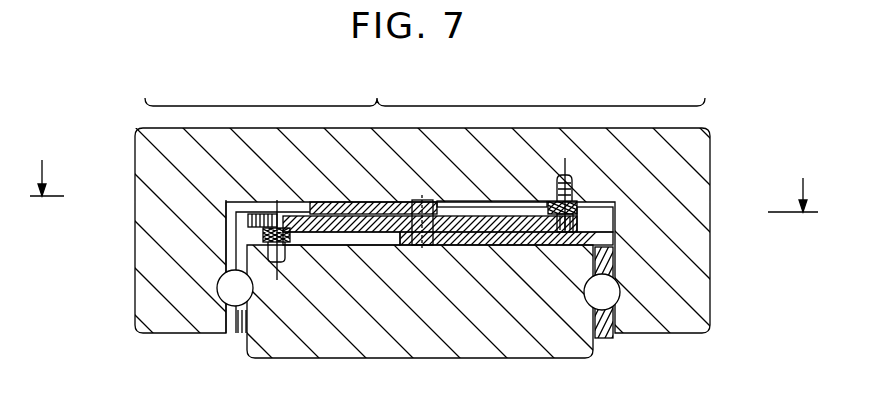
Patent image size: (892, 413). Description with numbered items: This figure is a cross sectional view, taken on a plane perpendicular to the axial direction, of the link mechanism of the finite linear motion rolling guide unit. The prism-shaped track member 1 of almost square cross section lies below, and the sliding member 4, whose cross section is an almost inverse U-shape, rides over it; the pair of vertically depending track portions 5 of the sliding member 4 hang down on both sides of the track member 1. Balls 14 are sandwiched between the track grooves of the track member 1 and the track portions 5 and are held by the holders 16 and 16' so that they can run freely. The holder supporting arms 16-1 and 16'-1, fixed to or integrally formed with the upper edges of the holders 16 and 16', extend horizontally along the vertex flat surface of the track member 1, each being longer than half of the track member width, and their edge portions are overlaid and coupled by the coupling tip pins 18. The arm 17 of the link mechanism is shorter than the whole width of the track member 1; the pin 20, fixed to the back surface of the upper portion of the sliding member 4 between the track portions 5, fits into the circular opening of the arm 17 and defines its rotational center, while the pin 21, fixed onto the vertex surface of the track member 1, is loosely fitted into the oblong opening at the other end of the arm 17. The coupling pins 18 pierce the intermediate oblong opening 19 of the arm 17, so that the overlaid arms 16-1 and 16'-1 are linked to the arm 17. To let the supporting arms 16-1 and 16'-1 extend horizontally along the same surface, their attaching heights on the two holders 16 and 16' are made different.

The track member 1 is at (427, 348).
The sliding member 4 is at (446, 206).
The vertically depending track portions 5 is at (137, 253).
The balls 14 is at (618, 303).
The holder 16 is at (603, 289).
The holder supporting arm 16-1 is at (538, 247).
The holder 16' is at (268, 242).
The holder supporting arm 16'-1 is at (414, 203).
The arm 17 is at (498, 207).
The coupling tip pins 18 is at (424, 203).
The oblong opening 19 is at (380, 247).
The pin 20 is at (573, 210).
The pin 21 is at (290, 242).